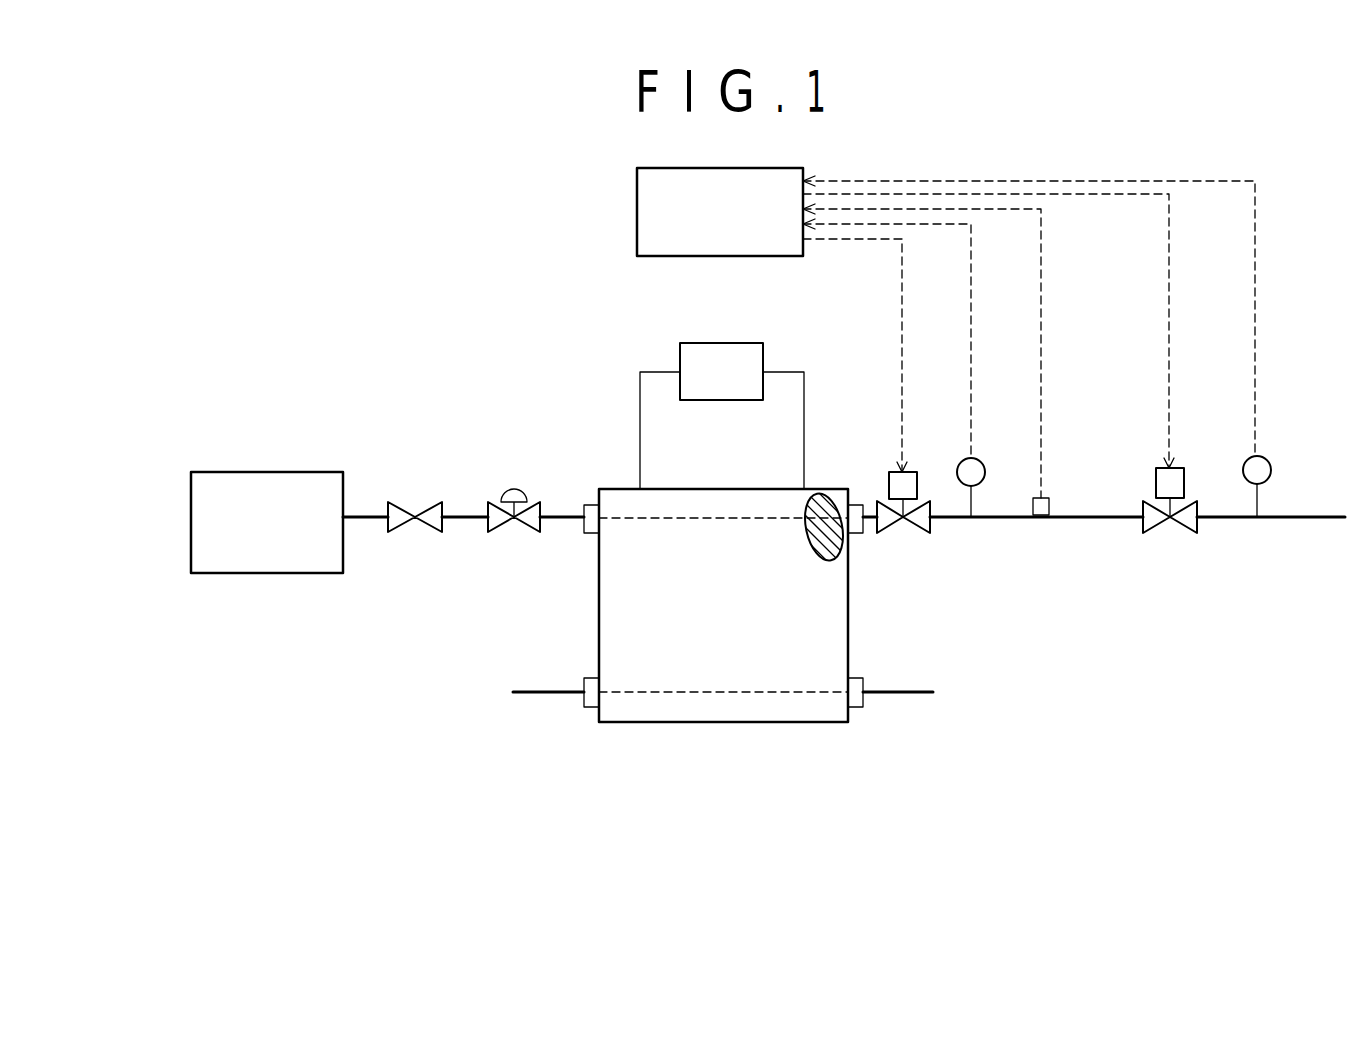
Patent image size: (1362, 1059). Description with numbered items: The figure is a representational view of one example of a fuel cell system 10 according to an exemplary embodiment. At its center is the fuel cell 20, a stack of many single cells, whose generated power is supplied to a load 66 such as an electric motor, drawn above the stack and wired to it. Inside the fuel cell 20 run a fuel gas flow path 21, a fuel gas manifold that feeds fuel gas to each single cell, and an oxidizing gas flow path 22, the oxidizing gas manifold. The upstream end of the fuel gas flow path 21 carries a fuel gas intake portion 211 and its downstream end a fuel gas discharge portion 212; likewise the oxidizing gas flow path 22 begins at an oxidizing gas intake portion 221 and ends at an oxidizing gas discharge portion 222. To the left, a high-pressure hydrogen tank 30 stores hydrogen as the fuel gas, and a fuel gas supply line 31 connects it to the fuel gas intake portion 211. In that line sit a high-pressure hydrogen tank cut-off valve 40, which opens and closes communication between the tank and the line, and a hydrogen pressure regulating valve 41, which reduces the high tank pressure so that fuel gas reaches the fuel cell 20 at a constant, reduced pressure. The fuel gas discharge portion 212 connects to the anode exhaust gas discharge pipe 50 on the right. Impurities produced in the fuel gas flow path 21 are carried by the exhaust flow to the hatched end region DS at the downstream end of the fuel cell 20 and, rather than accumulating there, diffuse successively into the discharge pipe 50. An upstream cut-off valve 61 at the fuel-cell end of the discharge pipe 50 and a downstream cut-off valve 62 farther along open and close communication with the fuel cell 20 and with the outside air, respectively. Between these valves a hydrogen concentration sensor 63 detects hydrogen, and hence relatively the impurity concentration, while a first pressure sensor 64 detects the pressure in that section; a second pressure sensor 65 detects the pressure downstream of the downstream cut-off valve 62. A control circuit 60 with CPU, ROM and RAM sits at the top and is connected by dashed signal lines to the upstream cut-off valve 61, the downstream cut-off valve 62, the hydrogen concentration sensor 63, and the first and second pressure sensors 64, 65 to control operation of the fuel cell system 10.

The fuel cell system 10 is at (520, 770).
The fuel cell 20 is at (723, 605).
The fuel gas flow path 21 is at (662, 519).
The oxidizing gas flow path 22 is at (650, 692).
The high-pressure hydrogen tank 30 is at (315, 472).
The fuel gas supply line 31 is at (367, 517).
The high-pressure hydrogen tank cut-off valve 40 is at (427, 533).
The hydrogen pressure regulating valve 41 is at (525, 533).
The anode exhaust gas discharge pipe 50 is at (1073, 519).
The control circuit 60 is at (637, 212).
The upstream cut-off valve 61 is at (913, 472).
The downstream cut-off valve 62 is at (1178, 482).
The hydrogen concentration sensor 63 is at (1040, 515).
The first pressure sensor 64 is at (977, 470).
The second pressure sensor 65 is at (1263, 465).
The load 66 is at (702, 343).
The fuel gas intake portion 211 is at (593, 505).
The fuel gas discharge portion 212 is at (857, 503).
The oxidizing gas intake portion 221 is at (594, 710).
The oxidizing gas discharge portion 222 is at (857, 710).
The end region DS is at (833, 540).